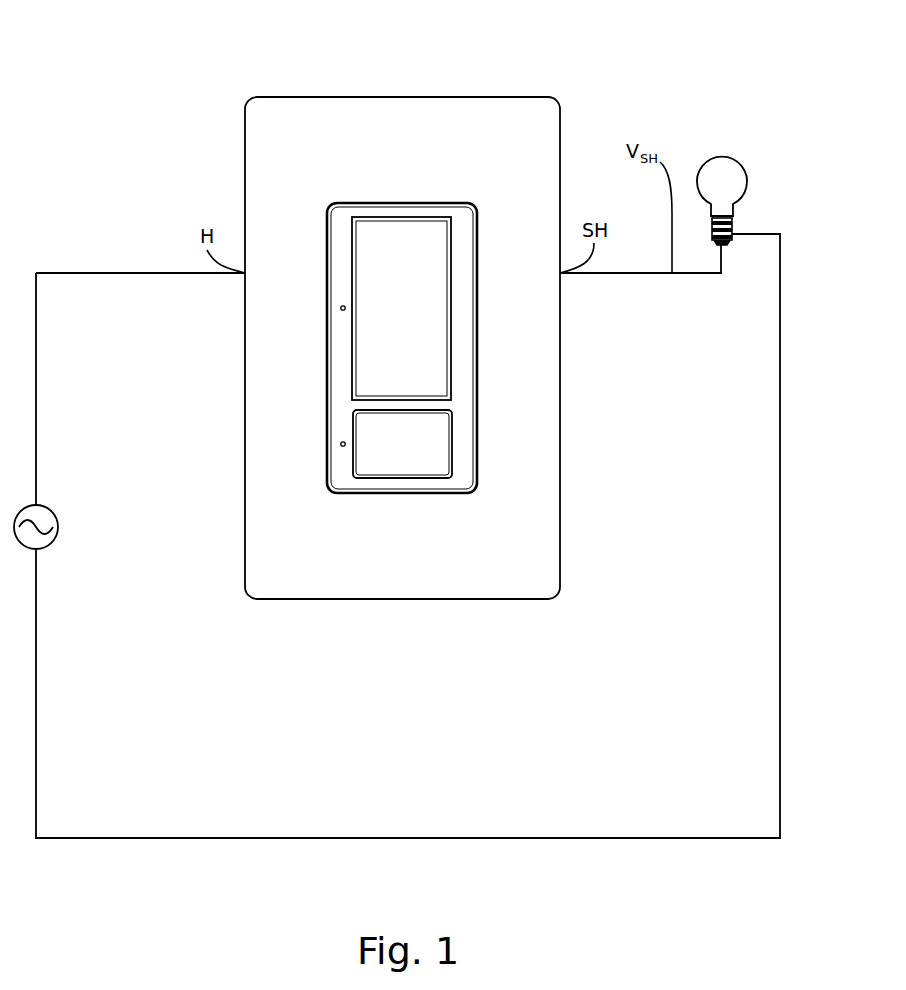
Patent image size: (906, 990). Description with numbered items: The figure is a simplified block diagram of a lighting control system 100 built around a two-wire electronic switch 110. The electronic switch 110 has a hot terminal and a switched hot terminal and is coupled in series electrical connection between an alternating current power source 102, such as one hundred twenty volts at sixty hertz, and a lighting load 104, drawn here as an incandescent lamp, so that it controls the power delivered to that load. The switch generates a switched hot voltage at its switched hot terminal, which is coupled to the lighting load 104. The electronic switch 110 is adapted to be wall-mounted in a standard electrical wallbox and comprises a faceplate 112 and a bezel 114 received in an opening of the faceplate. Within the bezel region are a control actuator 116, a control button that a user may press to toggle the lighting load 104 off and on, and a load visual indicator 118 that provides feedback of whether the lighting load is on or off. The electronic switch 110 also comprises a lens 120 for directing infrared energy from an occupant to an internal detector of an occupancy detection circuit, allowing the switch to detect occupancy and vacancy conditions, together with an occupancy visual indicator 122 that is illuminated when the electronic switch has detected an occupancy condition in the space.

The lighting control system 100 is at (108, 170).
The alternating current (AC) power source 102 is at (45, 508).
The lighting load 104 is at (712, 178).
The two-wire electronic switch 110 is at (393, 125).
The faceplate 112 is at (304, 148).
The bezel 114 is at (462, 250).
The control actuator 116 is at (408, 325).
The load visual indicator 118 is at (343, 308).
The lens 120 is at (415, 452).
The occupancy visual indicator 122 is at (343, 444).